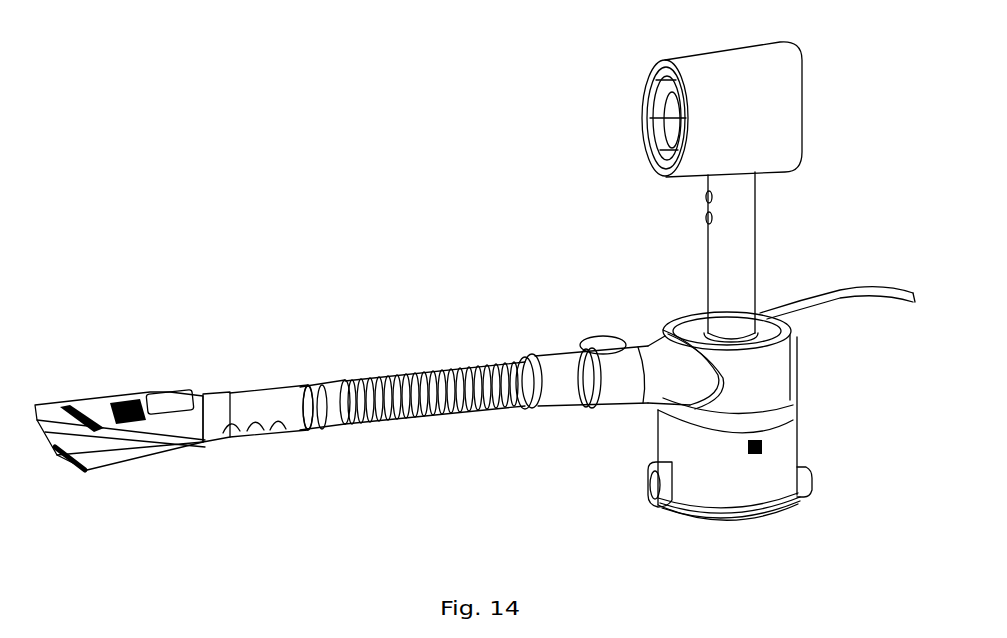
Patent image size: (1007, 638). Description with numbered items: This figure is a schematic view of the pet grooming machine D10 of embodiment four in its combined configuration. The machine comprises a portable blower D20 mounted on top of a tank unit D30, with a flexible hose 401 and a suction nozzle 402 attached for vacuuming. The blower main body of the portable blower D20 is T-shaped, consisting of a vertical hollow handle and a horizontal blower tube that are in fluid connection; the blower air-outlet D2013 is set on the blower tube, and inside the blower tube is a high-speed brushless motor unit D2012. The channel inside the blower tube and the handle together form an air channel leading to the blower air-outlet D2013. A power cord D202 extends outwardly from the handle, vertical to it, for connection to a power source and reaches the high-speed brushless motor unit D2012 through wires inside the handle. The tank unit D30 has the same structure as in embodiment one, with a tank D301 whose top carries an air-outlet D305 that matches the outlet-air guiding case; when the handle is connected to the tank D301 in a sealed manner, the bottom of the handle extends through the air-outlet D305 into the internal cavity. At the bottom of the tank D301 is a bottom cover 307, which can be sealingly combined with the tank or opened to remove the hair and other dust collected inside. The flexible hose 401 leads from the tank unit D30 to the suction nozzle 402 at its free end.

The pet grooming machine D10 is at (145, 76).
The portable blower D20 is at (633, 200).
The blower air-outlet D2013 is at (650, 93).
The high-speed brushless motor unit D2012 is at (650, 120).
The power cord D202 is at (840, 290).
The tank unit D30 is at (625, 452).
The air-outlet D305 is at (703, 317).
The tank D301 is at (800, 443).
The bottom cover 307 is at (773, 520).
The flexible hose 401 is at (423, 378).
The suction nozzle 402 is at (100, 407).